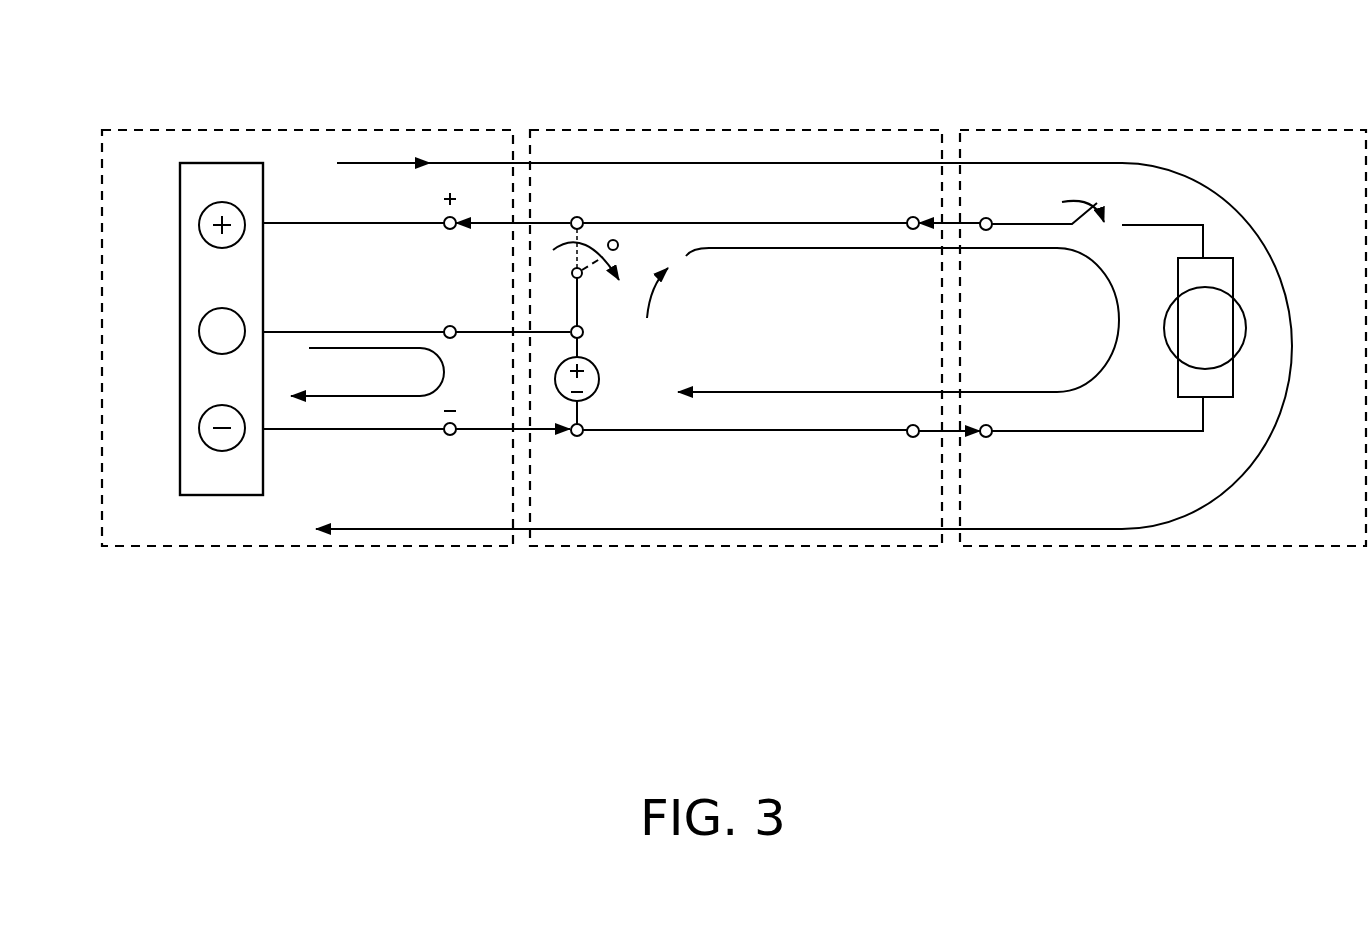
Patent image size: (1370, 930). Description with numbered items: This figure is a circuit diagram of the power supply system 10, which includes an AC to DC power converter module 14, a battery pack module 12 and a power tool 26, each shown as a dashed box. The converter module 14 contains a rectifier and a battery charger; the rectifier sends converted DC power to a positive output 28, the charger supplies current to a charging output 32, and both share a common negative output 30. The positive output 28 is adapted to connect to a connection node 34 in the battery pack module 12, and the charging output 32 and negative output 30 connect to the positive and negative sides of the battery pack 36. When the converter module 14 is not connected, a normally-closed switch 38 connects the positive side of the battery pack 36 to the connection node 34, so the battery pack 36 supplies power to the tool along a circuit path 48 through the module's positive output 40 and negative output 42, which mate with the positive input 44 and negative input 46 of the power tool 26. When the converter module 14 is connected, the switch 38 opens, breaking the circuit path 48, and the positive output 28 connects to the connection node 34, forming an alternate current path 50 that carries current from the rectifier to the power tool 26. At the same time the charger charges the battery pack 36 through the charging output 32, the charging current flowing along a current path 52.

The power supply system 10 is at (624, 590).
The battery pack module 12 is at (672, 130).
The AC to DC power converter module 14 is at (270, 130).
The power tool 26 is at (1170, 132).
The positive output 28 is at (447, 231).
The negative output 30 is at (446, 437).
The charging output 32 is at (444, 327).
The connection node 34 is at (583, 218).
The battery pack 36 is at (600, 373).
The switch 38 is at (619, 244).
The positive output 40 is at (909, 218).
The negative output 42 is at (911, 437).
The positive input 44 is at (991, 218).
The negative input 46 is at (992, 426).
The circuit path 48 is at (870, 250).
The alternate current path 50 is at (798, 163).
The current path 52 is at (406, 396).